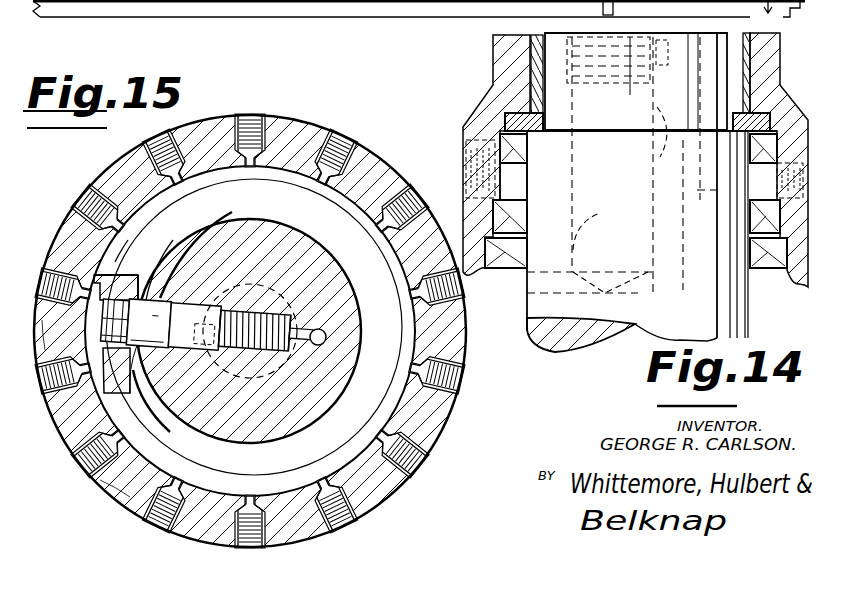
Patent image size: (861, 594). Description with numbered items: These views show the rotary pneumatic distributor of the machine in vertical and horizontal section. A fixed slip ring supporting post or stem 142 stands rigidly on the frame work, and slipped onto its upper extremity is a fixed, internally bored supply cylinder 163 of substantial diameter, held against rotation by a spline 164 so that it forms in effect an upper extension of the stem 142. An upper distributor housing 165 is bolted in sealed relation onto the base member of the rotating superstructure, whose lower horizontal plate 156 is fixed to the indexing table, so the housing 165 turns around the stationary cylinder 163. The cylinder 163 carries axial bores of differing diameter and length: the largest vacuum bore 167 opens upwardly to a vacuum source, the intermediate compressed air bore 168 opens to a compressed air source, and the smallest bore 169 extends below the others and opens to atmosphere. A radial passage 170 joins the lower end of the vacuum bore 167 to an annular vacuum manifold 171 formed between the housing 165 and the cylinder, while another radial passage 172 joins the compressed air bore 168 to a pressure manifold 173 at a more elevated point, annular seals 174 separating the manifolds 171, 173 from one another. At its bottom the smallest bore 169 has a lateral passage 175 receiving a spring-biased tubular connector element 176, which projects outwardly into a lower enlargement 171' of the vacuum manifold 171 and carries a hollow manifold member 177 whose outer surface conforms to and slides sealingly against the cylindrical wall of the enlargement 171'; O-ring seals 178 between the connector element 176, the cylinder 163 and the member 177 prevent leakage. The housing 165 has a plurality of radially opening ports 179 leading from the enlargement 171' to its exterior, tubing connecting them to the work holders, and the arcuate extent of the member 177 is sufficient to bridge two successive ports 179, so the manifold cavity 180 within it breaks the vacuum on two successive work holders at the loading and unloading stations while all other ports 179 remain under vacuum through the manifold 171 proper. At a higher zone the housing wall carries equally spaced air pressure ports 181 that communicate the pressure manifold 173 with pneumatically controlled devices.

In FIG. 15, the fixed slip ring supporting post or stem 142 is at (325, 250).
In FIG. 15, the lower horizontal plate 156 is at (190, 1).
In FIG. 14, the supply cylinder 163 is at (727, 323).
In FIG. 15, the supply cylinder 163 is at (296, 243).
In FIG. 15, the spline 164 is at (210, 352).
In FIG. 14, the upper distributor housing 165 is at (472, 268).
In FIG. 15, the upper distributor housing 165 is at (377, 487).
In FIG. 14, the vacuum bore 167 is at (590, 165).
In FIG. 14, the compressed air bore 168 is at (663, 152).
In FIG. 15, the smallest bore 169 is at (325, 334).
In FIG. 14, the radial passage 170 is at (563, 295).
In FIG. 14, the annular vacuum manifold 171 is at (779, 174).
In FIG. 15, the annular vacuum manifold 171 is at (254, 327).
In FIG. 15, the lower enlargement of vacuum manifold 171' is at (93, 500).
In FIG. 14, the radial passage 172 is at (700, 163).
In FIG. 14, the pressure manifold 173 is at (515, 178).
In FIG. 14, the annular seals 174 is at (537, 203).
In FIG. 15, the lateral passage 175 is at (269, 358).
In FIG. 15, the tubular connector element 176 is at (174, 259).
In FIG. 15, the hollow manifold member 177 is at (123, 267).
In FIG. 15, the O-ring seals 178 is at (150, 290).
In FIG. 15, the radially opening ports 179 is at (257, 118).
In FIG. 15, the manifold cavity 180 is at (45, 352).
In FIG. 14, the air pressure ports 181 is at (470, 140).